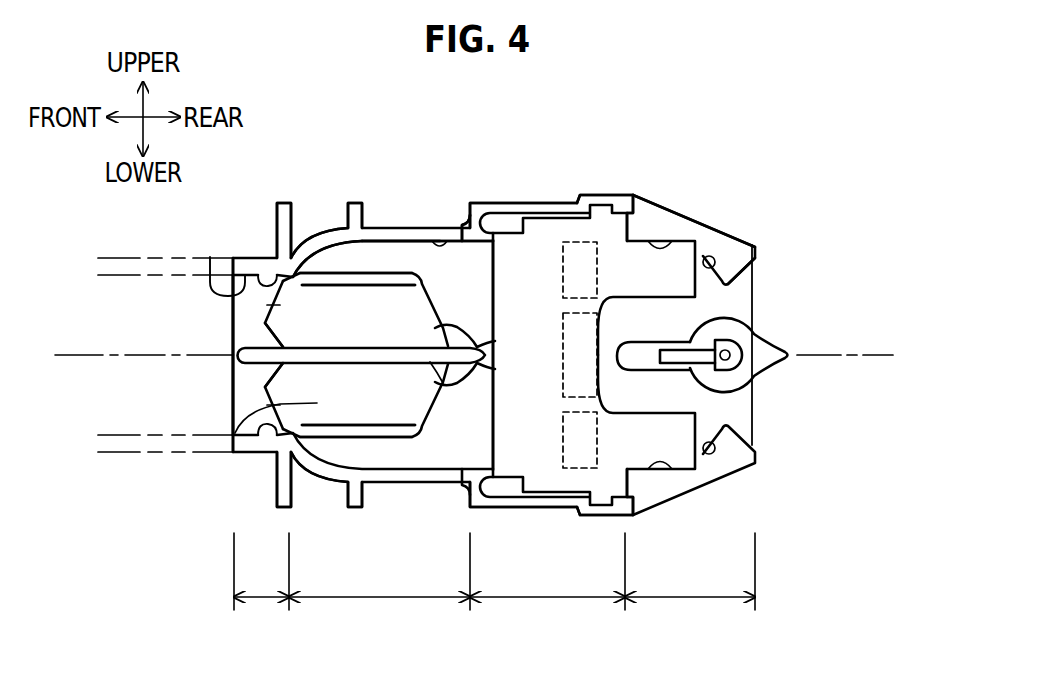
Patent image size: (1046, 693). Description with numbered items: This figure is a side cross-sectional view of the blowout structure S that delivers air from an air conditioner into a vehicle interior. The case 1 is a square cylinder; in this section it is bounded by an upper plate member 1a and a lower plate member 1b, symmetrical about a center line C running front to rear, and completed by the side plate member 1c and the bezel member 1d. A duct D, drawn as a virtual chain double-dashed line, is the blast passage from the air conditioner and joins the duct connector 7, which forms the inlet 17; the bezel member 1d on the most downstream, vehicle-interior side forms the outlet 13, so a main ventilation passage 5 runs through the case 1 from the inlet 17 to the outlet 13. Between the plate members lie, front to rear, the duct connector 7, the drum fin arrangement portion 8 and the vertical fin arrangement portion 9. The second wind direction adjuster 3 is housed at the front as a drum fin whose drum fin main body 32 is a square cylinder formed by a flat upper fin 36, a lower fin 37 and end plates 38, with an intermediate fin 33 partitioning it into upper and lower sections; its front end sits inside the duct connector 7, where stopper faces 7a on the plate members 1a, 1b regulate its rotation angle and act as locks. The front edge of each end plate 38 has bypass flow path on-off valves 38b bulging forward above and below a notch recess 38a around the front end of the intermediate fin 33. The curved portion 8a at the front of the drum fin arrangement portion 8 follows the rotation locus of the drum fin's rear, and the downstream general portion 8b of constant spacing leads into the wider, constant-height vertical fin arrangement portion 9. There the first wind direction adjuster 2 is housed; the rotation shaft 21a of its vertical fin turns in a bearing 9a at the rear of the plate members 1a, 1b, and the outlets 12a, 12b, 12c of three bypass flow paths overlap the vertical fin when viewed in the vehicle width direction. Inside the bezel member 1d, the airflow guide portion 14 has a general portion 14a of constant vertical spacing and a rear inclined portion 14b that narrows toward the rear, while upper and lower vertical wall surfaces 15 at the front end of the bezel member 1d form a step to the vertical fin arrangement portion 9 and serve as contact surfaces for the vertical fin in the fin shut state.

The case 1 is at (488, 203).
The upper plate member 1a is at (317, 253).
The lower plate member 1b is at (440, 480).
The side plate member 1c is at (425, 235).
The bezel member 1d is at (758, 246).
The first wind direction adjuster 2 is at (523, 460).
The rotation shaft 21a is at (600, 205).
The second wind direction adjuster 3 is at (238, 455).
The main ventilation passage 5 is at (456, 297).
The duct connector 7 is at (262, 603).
The stopper face 7a is at (257, 258).
The drum fin arrangement portion 8 is at (380, 603).
The curved portion 8a is at (341, 235).
The general portion 8b is at (440, 240).
The vertical fin arrangement portion 9 is at (551, 603).
The bearing 9a is at (621, 205).
The outlet 12a is at (563, 285).
The outlet 12b is at (563, 342).
The outlet 12c is at (565, 453).
The outlet 13 is at (760, 432).
The airflow guide portion 14 is at (690, 603).
The general portion 14a is at (679, 242).
The inclined portion 14b is at (722, 266).
The vertical wall surface 15 is at (622, 220).
The inlet 17 is at (212, 257).
The drum fin main body 32 is at (487, 356).
The intermediate fin 33 is at (448, 362).
The upper fin 36 is at (361, 273).
The lower fin 37 is at (358, 437).
The end plate 38 is at (412, 410).
The notch recess 38a is at (281, 345).
The bypass flow path on-off valve 38b is at (280, 305).
The blowout structure S is at (753, 160).
The center line C is at (872, 356).
The duct D is at (133, 257).